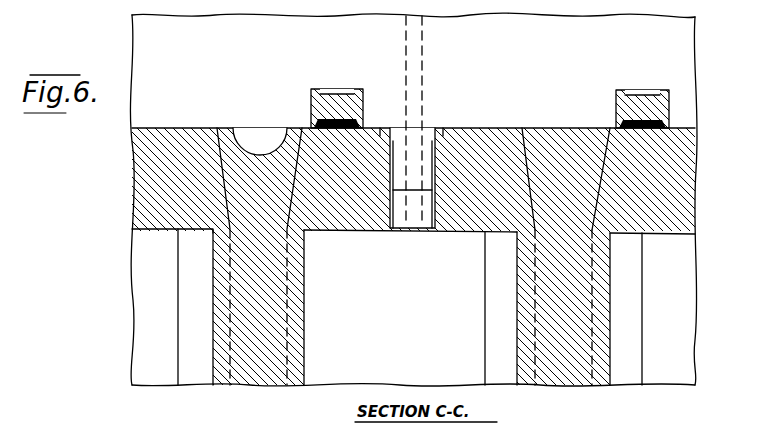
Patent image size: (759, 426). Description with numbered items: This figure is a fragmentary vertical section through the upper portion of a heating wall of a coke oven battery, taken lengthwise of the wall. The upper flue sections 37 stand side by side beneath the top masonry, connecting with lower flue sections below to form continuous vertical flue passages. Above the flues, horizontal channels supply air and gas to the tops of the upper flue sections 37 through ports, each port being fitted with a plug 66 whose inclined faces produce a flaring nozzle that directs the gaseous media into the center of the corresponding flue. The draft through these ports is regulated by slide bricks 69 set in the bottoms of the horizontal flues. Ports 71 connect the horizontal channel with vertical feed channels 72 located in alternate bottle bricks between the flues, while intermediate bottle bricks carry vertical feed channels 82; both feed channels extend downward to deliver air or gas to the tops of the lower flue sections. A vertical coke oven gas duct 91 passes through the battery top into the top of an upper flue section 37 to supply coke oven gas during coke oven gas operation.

The upper flue section 37 is at (409, 307).
The plug 66 is at (425, 231).
The slide brick 69 is at (336, 106).
The port 71 is at (568, 140).
The vertical feed channel 72 is at (614, 300).
The vertical feed channel 82 is at (262, 150).
The coke oven gas duct 91 is at (402, 64).